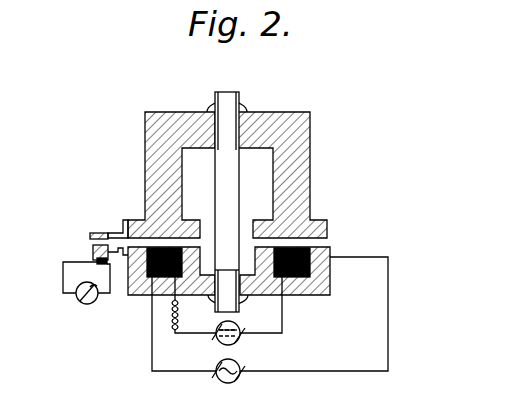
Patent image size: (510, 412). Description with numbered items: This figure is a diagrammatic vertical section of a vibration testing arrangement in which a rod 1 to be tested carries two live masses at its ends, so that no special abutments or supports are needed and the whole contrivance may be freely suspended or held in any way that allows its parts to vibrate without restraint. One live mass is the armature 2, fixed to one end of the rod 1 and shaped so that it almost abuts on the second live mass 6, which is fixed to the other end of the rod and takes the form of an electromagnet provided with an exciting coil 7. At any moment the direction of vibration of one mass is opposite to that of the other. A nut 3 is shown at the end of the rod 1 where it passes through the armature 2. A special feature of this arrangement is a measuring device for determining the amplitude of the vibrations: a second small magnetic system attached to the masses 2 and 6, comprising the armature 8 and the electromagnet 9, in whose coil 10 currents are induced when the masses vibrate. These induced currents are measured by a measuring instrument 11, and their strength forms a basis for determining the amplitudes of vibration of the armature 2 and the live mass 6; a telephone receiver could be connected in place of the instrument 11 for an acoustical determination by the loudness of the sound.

The rod 1 is at (232, 194).
The armature 2 is at (306, 159).
The nut 3 is at (247, 104).
The live mass 6 is at (331, 286).
The exciting coil 7 is at (332, 254).
The armature 8 is at (103, 231).
The electromagnet 9 is at (93, 251).
The coil 10 is at (96, 260).
The measuring instrument 11 is at (85, 305).